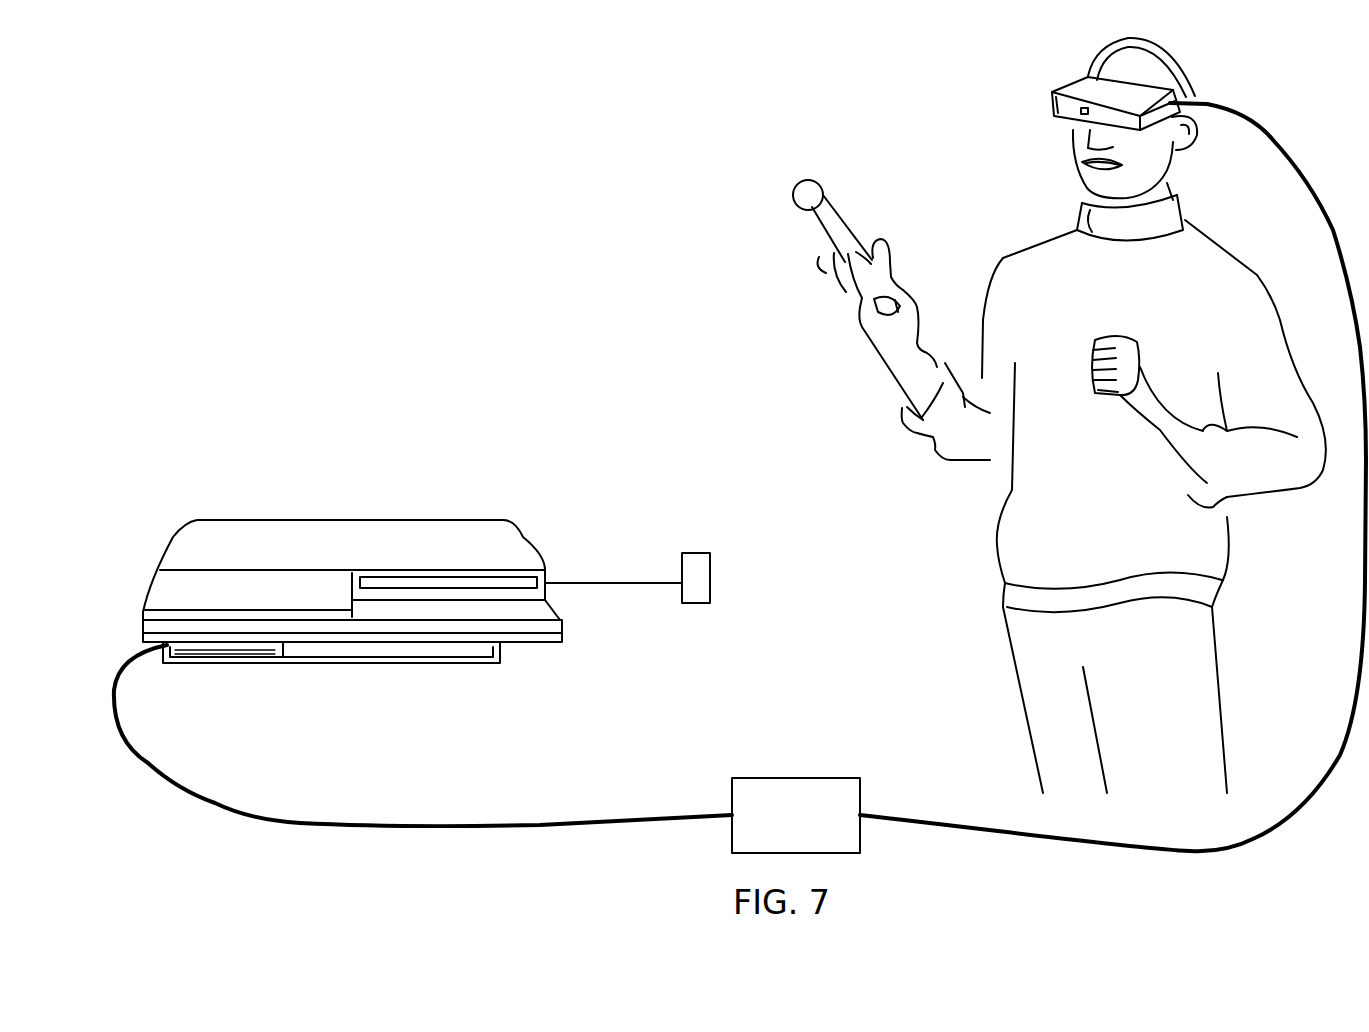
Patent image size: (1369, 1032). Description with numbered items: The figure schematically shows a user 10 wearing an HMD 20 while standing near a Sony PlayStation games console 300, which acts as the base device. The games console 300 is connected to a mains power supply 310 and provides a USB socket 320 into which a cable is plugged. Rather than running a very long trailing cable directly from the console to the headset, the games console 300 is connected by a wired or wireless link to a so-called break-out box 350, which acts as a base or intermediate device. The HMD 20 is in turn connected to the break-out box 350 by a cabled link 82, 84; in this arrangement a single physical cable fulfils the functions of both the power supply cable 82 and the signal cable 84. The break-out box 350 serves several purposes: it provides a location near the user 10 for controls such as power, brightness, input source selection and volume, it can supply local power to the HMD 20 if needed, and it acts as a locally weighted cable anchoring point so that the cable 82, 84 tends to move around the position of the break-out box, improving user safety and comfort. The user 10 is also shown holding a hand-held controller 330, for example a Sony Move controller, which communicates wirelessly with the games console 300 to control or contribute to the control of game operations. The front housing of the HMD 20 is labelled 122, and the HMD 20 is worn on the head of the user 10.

The user 10 is at (1010, 242).
The HMD 20 is at (1193, 93).
The HMD front unit / display housing 122 is at (1053, 110).
The hand-held controller 330 is at (837, 203).
The games console 300 is at (342, 515).
The mains power supply 310 is at (690, 553).
The USB socket 320 is at (187, 657).
The break-out box 350 is at (795, 778).
The cable 82 is at (967, 817).
The cable 84 is at (423, 735).